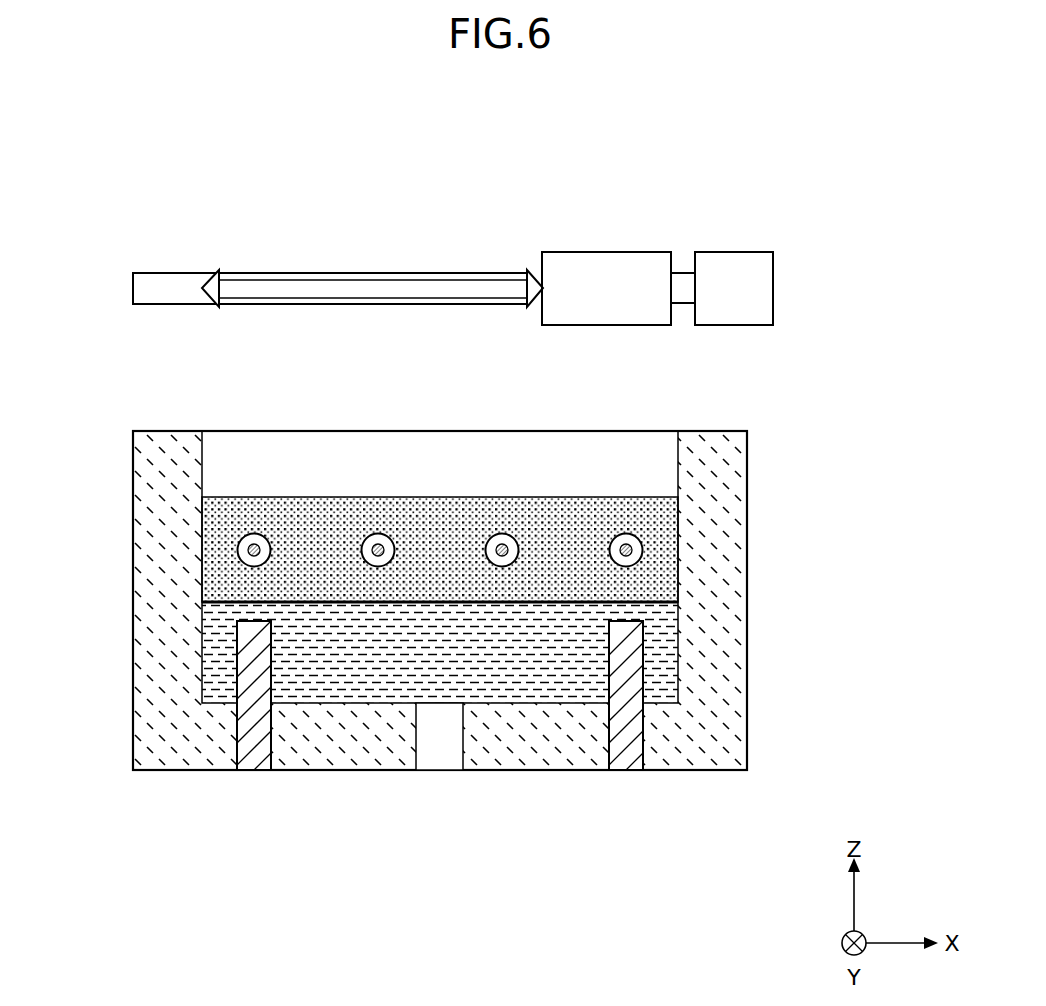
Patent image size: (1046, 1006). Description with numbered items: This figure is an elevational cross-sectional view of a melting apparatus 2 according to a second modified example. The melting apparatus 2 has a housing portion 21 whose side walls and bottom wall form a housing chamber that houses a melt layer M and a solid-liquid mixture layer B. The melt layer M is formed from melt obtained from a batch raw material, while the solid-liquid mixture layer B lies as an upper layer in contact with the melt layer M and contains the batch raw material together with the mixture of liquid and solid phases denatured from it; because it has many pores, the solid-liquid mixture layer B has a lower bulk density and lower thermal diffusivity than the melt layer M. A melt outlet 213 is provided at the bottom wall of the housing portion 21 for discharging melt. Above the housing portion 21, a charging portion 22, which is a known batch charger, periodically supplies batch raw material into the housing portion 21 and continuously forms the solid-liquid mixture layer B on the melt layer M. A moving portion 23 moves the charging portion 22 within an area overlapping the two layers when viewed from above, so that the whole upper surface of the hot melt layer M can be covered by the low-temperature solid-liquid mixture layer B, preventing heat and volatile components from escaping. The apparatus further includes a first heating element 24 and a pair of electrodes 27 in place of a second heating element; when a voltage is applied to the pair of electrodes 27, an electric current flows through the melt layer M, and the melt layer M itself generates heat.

The melting apparatus 2 is at (77, 202).
The housing portion 21 is at (126, 612).
The charging portion 22 is at (601, 262).
The moving portion 23 is at (730, 262).
The first heating element 24 is at (257, 534).
The pair of electrodes 27 is at (258, 750).
The melt outlet 213 is at (437, 757).
The solid-liquid mixture layer B is at (437, 520).
The melt layer M is at (572, 686).